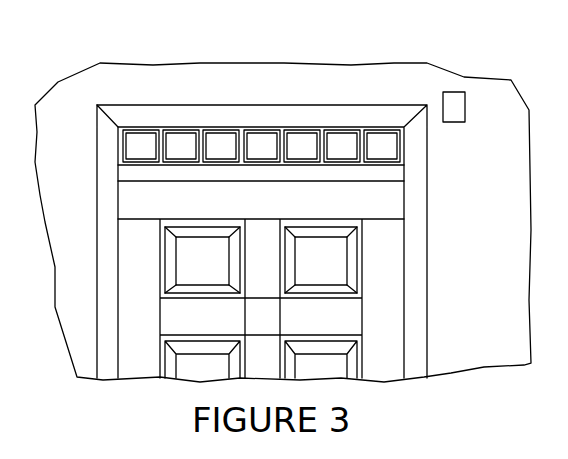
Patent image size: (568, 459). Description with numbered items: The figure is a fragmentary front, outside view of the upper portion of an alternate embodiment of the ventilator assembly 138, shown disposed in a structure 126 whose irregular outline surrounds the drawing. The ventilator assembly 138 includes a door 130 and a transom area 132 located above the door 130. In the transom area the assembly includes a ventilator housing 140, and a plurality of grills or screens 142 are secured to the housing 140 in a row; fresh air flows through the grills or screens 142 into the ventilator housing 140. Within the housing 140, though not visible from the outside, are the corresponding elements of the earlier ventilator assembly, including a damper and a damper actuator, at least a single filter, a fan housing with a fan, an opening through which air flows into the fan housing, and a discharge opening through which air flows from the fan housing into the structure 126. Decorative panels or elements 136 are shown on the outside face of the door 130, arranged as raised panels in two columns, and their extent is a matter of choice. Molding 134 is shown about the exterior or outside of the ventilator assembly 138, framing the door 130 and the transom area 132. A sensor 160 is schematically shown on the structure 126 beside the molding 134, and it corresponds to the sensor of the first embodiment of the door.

The structure 126 is at (158, 90).
The door 130 is at (280, 225).
The transom area 132 is at (148, 170).
The molding 134 is at (427, 160).
The decorative panels 136 is at (339, 367).
The ventilator assembly 138 is at (118, 138).
The ventilator housing 140 is at (272, 117).
The grills or screens 142 is at (306, 142).
The sensor 160 is at (455, 85).